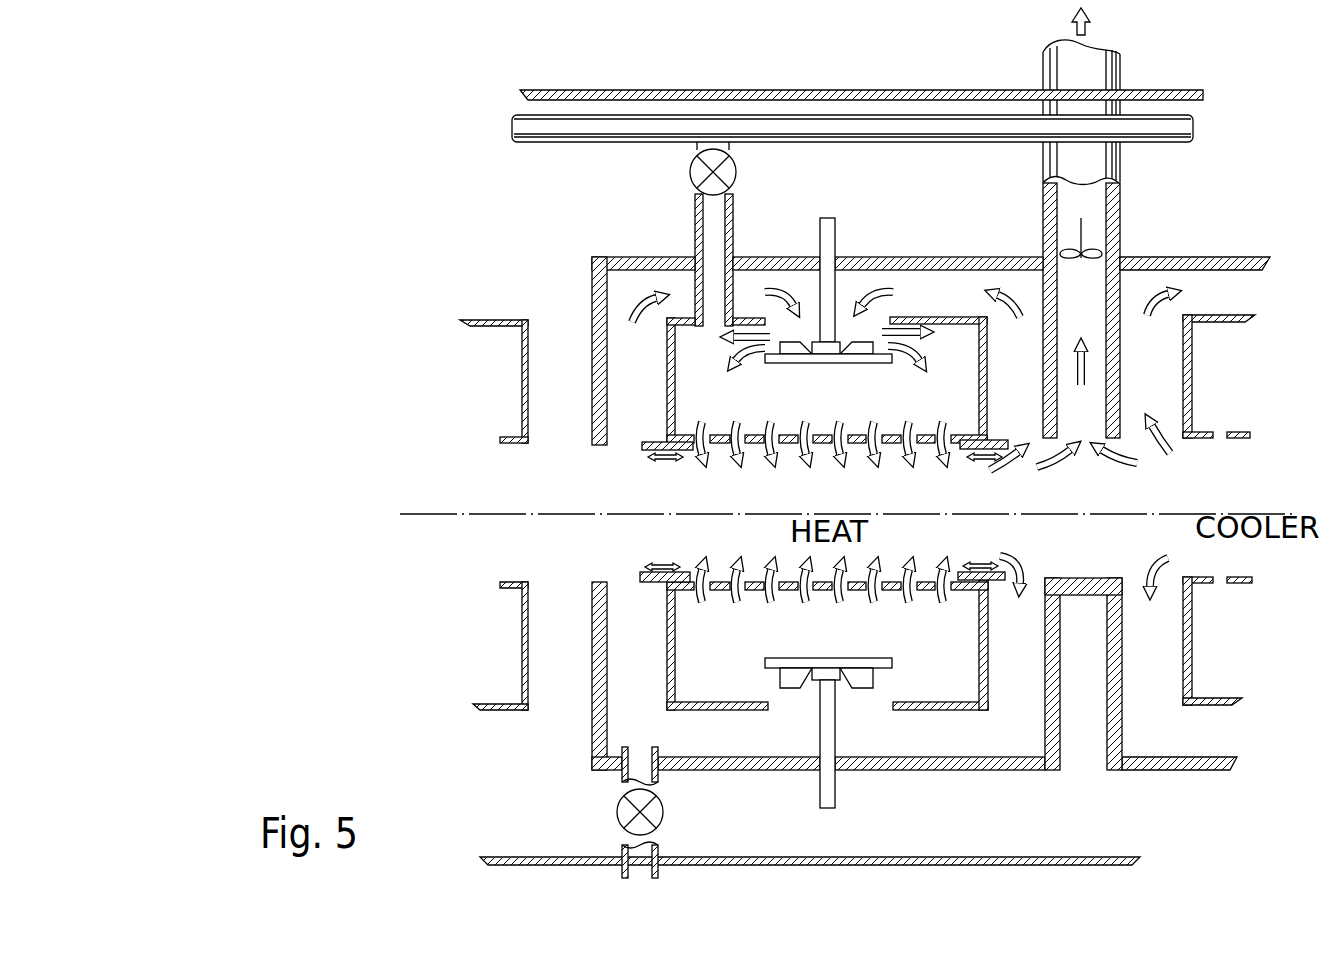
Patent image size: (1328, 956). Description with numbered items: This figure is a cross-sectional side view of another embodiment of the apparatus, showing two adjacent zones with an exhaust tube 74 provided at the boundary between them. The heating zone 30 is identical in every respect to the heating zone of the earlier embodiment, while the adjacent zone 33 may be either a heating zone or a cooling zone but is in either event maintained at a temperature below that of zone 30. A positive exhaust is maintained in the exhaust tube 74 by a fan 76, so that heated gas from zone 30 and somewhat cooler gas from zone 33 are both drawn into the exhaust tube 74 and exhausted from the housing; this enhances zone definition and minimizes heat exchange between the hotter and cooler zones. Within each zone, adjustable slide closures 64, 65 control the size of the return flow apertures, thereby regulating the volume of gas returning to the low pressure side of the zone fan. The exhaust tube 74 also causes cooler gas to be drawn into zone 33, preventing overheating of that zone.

The heating zone 30 is at (895, 246).
The zone 33 is at (1295, 377).
The closure 64 is at (656, 441).
The closure 65 is at (648, 584).
The exhaust tube 74 is at (1062, 250).
The fan 76 is at (1120, 200).